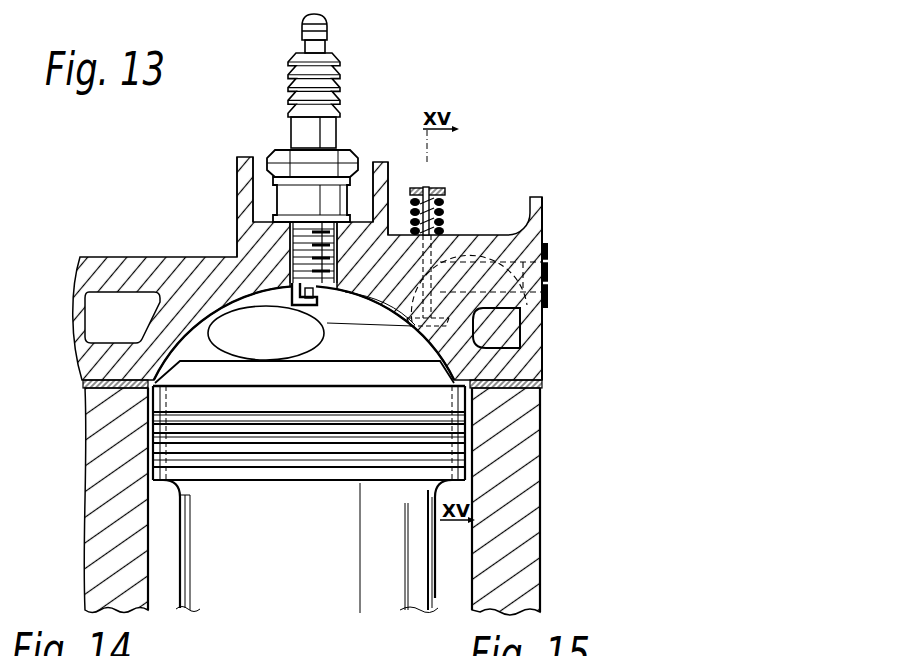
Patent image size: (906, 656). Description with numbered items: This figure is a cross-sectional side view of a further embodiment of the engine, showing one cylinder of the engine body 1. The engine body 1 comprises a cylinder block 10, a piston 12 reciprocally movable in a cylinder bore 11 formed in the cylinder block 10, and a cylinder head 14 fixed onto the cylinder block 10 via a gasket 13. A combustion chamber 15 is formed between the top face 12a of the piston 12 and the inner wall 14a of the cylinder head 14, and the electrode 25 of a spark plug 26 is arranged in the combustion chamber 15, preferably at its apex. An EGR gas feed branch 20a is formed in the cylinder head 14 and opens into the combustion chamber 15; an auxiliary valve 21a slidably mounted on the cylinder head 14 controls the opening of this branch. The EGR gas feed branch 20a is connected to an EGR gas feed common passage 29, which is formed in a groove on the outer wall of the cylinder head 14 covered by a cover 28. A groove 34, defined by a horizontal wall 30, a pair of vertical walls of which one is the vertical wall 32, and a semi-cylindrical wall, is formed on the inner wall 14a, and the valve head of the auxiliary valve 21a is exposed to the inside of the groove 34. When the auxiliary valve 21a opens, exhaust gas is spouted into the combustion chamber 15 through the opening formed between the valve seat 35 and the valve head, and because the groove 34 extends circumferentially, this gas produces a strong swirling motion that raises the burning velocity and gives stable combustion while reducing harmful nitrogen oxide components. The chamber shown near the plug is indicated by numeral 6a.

The engine body 1 is at (545, 369).
The auxiliary combustion chamber 6a is at (223, 322).
The cylinder block 10 is at (528, 518).
The cylinder bore 11 is at (467, 563).
The piston 12 is at (392, 603).
The top face of the piston 12a is at (322, 361).
The gasket 13 is at (548, 386).
The cylinder head 14 is at (203, 260).
The inner wall of the cylinder head 14a is at (362, 228).
The combustion chamber 15 is at (353, 356).
The EGR gas feed branch 20a is at (473, 240).
The auxiliary valve 21a is at (447, 200).
The electrode of the spark plug 25 is at (237, 235).
The spark plug 26 is at (290, 133).
The cover 28 is at (548, 294).
The EGR gas feed common passage 29 is at (548, 260).
The horizontal wall 30 is at (340, 362).
The vertical wall 32 is at (413, 327).
The groove 34 is at (423, 347).
The valve seat 35 is at (522, 320).